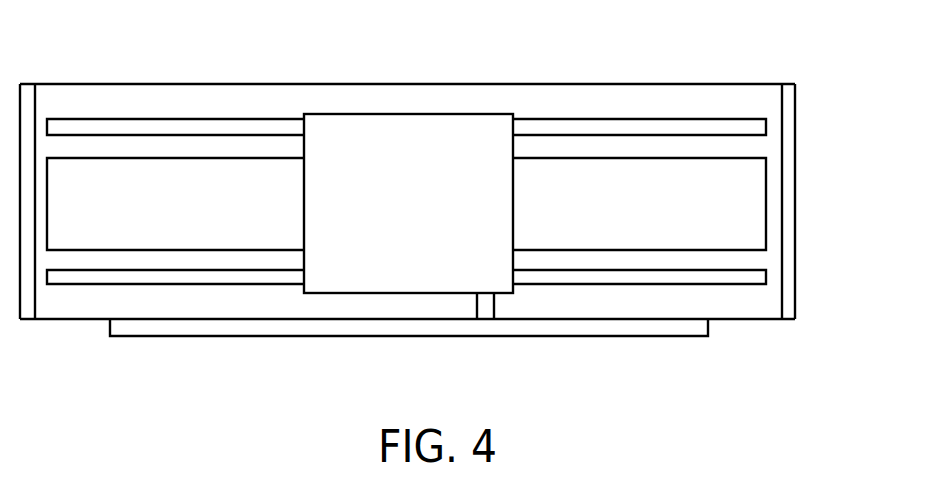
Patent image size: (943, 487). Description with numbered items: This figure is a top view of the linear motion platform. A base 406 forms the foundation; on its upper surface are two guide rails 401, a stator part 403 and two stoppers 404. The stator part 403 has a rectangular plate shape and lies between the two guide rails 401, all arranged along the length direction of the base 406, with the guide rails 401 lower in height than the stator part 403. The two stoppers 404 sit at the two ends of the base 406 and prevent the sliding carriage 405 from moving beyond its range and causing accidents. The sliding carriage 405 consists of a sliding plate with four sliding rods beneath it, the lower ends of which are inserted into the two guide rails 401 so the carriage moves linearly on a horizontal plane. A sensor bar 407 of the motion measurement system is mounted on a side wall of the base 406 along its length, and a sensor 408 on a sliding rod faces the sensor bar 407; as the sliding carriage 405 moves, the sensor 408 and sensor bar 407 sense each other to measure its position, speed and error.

The guide rail 401 is at (557, 127).
The stator part 403 is at (653, 170).
The stopper 404 is at (790, 100).
The sliding carriage 405 is at (442, 125).
The base 406 is at (673, 312).
The sensor bar 407 is at (592, 330).
The sensor 408 is at (482, 306).